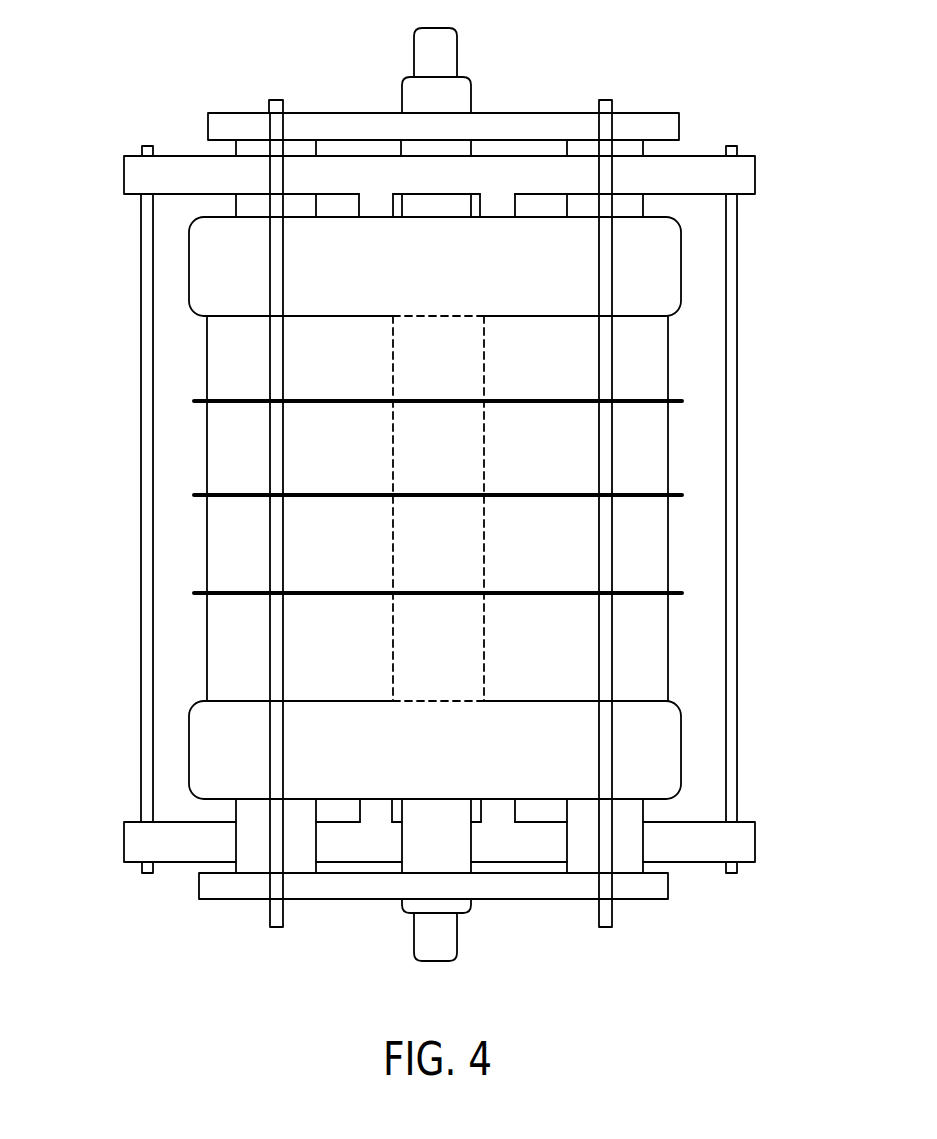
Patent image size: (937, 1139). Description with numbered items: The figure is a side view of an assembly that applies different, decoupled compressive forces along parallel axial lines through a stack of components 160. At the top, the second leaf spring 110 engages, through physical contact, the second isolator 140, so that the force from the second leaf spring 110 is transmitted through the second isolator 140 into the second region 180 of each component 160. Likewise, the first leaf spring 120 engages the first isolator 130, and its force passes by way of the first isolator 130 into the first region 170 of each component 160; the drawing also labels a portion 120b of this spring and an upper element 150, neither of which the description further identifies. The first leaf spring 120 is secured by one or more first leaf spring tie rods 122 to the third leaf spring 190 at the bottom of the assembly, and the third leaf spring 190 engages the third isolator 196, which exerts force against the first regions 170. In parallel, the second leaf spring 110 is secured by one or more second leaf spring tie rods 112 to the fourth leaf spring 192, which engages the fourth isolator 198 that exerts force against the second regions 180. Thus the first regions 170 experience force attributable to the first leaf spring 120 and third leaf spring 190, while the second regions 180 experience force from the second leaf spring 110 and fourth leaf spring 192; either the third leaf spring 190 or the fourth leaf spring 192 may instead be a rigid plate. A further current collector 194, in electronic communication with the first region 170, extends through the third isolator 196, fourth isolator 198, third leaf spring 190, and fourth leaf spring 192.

The second leaf spring 110 is at (482, 126).
The second leaf spring tie rod 112 is at (614, 108).
The first leaf spring 120 is at (178, 167).
The upper flange plate end portion 120b is at (743, 174).
The first leaf spring tie rod 122 is at (738, 400).
The first isolator 130 is at (410, 102).
The second isolator 140 is at (645, 279).
The upper shaft 150 is at (448, 43).
The component 160 is at (123, 603).
The first region 170 is at (485, 697).
The second region 180 is at (657, 552).
The third leaf spring 190 is at (745, 843).
The fourth leaf spring 192 is at (663, 885).
The further current collector 194 is at (440, 935).
The third isolator 196 is at (416, 906).
The fourth isolator 198 is at (670, 751).